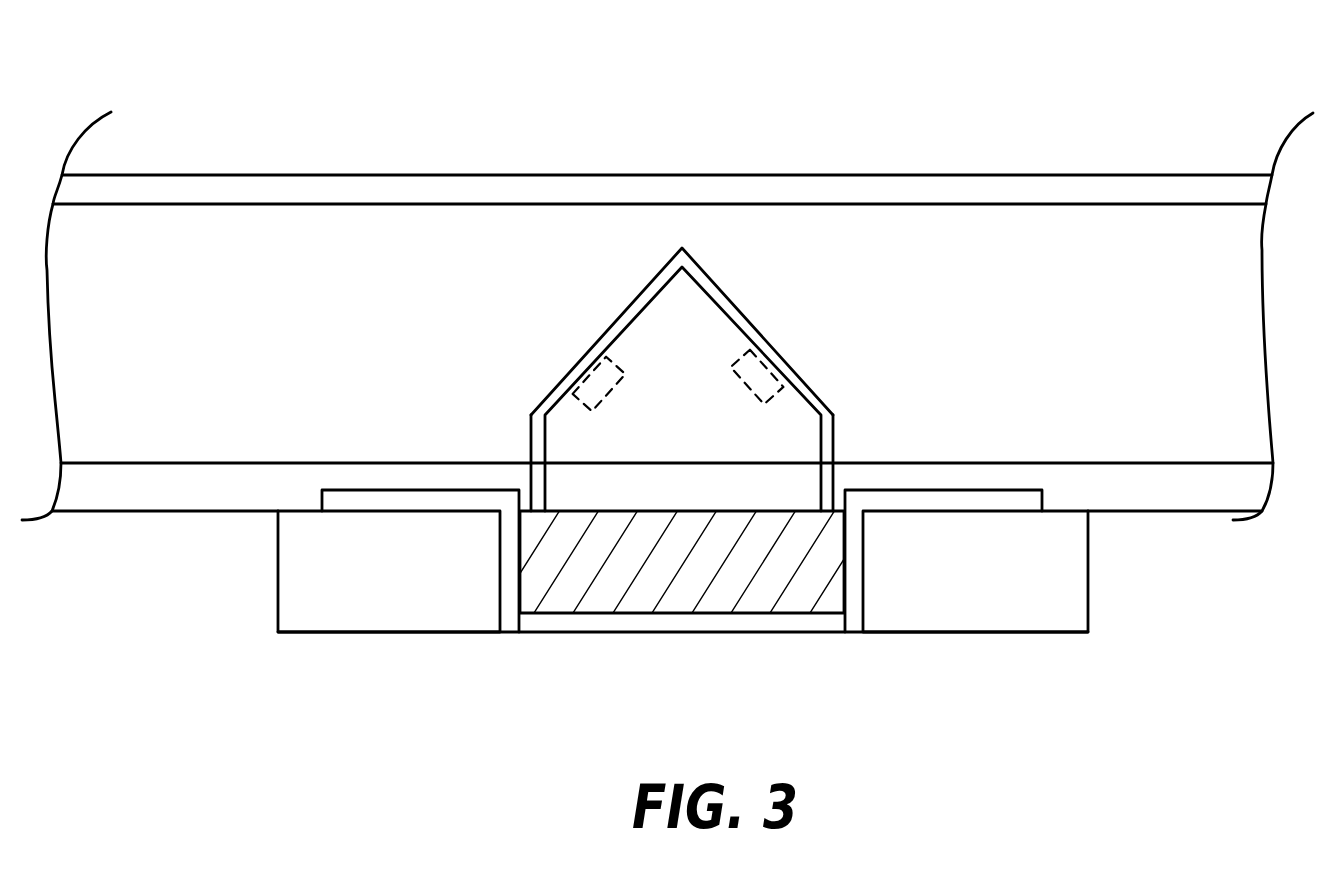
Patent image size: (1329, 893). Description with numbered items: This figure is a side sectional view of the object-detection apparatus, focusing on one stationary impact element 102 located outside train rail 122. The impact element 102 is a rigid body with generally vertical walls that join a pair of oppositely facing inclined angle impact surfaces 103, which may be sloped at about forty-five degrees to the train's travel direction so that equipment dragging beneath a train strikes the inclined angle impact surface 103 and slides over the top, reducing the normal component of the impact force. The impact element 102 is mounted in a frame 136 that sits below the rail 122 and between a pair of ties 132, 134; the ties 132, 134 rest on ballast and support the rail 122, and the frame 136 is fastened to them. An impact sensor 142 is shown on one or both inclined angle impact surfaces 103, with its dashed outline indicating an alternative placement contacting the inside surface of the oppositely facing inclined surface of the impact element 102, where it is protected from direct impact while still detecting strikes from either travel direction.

The stationary impact element 102 is at (721, 368).
The inclined angle impact surface 103 is at (708, 277).
The train rail 122 is at (1138, 191).
The tie 132 is at (1032, 618).
The tie 134 is at (352, 615).
The frame 136 is at (633, 593).
The impact sensor 142 is at (588, 378).